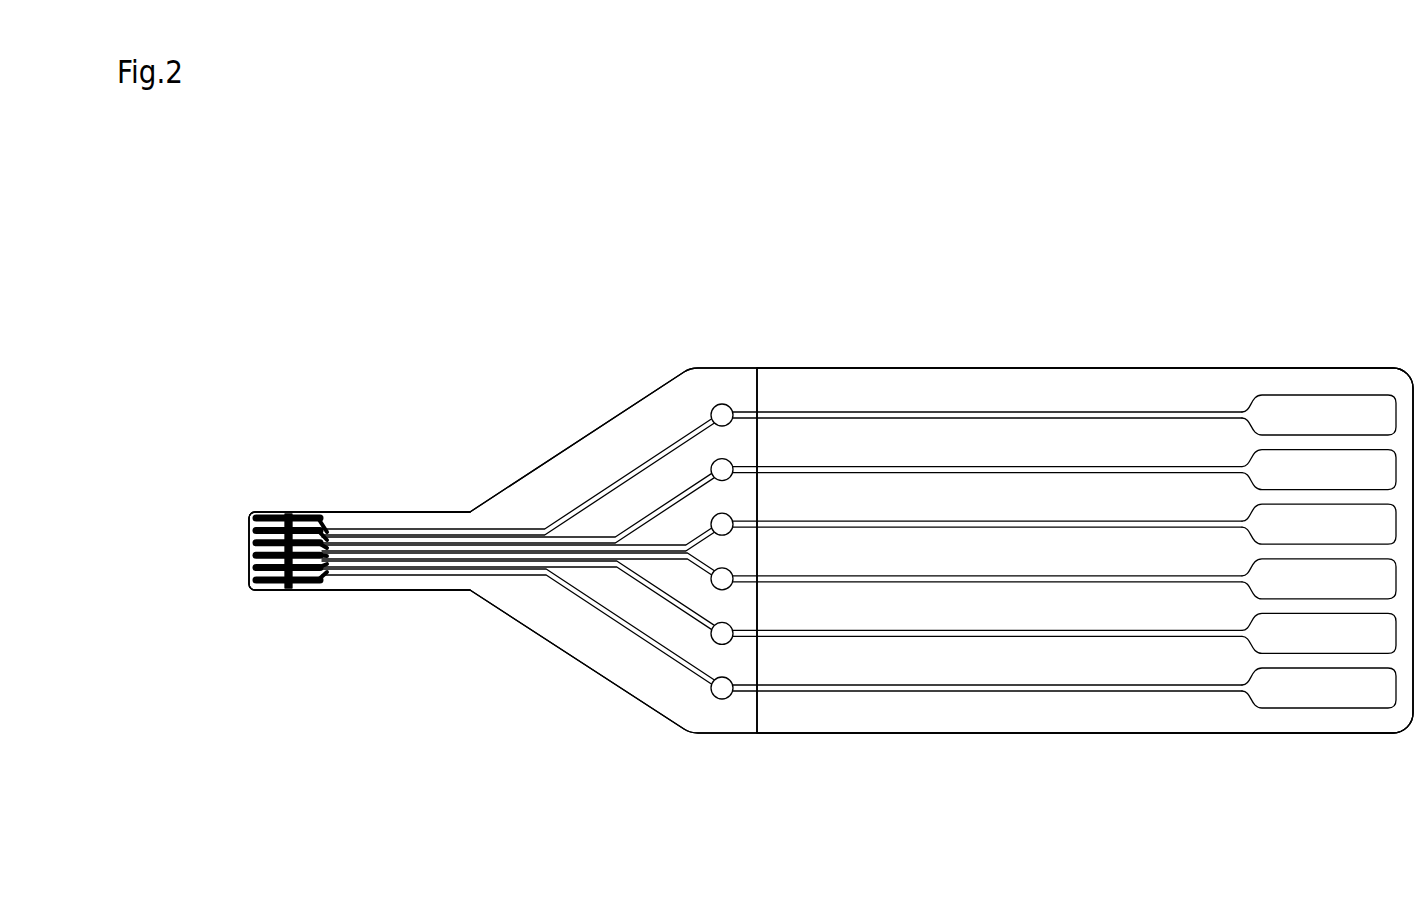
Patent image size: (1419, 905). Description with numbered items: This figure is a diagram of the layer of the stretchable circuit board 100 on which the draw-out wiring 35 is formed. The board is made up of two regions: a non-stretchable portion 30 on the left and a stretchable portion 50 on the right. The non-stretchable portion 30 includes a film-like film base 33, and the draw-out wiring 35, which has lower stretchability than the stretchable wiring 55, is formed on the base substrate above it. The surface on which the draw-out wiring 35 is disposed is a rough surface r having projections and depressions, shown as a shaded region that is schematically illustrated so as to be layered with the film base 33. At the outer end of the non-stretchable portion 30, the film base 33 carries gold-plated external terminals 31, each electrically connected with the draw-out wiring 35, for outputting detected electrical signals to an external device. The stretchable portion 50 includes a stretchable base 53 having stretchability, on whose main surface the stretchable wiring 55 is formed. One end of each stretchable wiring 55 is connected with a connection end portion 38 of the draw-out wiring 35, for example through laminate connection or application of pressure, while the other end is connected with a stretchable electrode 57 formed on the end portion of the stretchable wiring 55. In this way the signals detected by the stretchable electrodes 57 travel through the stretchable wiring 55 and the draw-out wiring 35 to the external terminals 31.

The stretchable circuit board 100 is at (845, 132).
The non-stretchable portion 30 is at (248, 784).
The external terminal 31 is at (270, 512).
The film base 33 is at (433, 591).
The draw-out wiring 35 is at (585, 493).
The connection end portion 38 is at (718, 404).
The stretchable portion 50 is at (818, 295).
The stretchable base 53 is at (833, 367).
The stretchable wiring 55 is at (1078, 410).
The stretchable electrode 57 is at (1328, 410).
The rough surface r is at (393, 512).